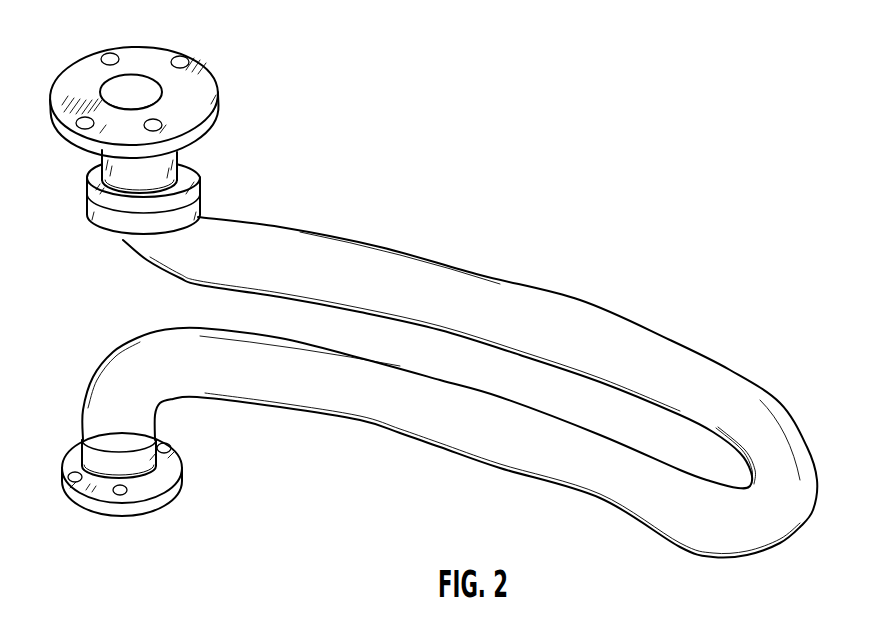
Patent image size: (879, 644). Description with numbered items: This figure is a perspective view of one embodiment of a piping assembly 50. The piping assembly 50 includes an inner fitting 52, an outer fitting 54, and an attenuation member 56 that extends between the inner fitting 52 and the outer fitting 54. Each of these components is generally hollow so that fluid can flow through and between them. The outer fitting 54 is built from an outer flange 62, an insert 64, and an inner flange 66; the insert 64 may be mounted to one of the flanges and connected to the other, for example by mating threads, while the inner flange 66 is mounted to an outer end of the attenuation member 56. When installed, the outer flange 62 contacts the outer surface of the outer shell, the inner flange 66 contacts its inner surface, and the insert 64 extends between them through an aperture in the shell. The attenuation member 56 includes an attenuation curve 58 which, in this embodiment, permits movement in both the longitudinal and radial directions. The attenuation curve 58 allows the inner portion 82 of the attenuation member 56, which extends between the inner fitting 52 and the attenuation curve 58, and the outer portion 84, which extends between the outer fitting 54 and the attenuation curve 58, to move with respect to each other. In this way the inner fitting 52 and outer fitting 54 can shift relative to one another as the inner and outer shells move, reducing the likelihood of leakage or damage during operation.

The piping assembly 50 is at (545, 148).
The inner fitting 52 is at (116, 537).
The outer fitting 54 is at (238, 98).
The attenuation member 56 is at (506, 233).
The attenuation curve 58 is at (797, 393).
The outer flange 62 is at (122, 50).
The insert 64 is at (130, 176).
The inner flange 66 is at (110, 230).
The inner portion 82 is at (392, 420).
The outer portion 84 is at (578, 318).